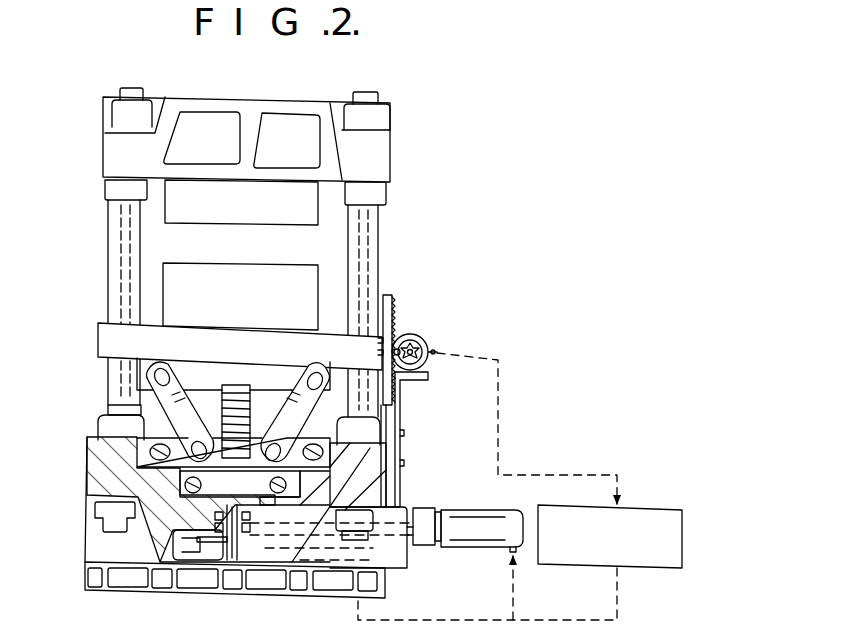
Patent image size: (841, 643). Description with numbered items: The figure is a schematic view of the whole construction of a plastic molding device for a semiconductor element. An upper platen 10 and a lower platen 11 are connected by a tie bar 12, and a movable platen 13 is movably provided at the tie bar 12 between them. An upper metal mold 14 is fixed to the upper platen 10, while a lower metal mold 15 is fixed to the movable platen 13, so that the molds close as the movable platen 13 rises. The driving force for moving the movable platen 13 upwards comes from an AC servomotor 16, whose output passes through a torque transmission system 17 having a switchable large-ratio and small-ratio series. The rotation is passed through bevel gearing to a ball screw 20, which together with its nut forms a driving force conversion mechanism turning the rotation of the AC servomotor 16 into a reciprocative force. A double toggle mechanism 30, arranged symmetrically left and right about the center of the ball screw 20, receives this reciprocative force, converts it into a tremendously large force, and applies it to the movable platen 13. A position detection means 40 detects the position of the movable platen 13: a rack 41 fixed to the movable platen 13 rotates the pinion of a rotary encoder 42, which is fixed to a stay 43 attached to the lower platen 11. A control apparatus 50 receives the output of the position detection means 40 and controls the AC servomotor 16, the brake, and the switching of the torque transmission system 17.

The upper platen 10 is at (392, 157).
The lower platen 11 is at (387, 460).
The tie bar 12 is at (367, 260).
The movable platen 13 is at (98, 336).
The upper metal mold 14 is at (283, 222).
The lower metal mold 15 is at (215, 262).
The AC servomotor 16 is at (458, 548).
The torque transmission system 17 is at (378, 572).
The ball screw 20 is at (251, 383).
The double toggle mechanism 30 is at (158, 412).
The position detection means 40 is at (436, 329).
The rack 41 is at (393, 314).
The rotary encoder 42 is at (424, 364).
The stay 43 is at (402, 424).
The control apparatus 50 is at (683, 540).